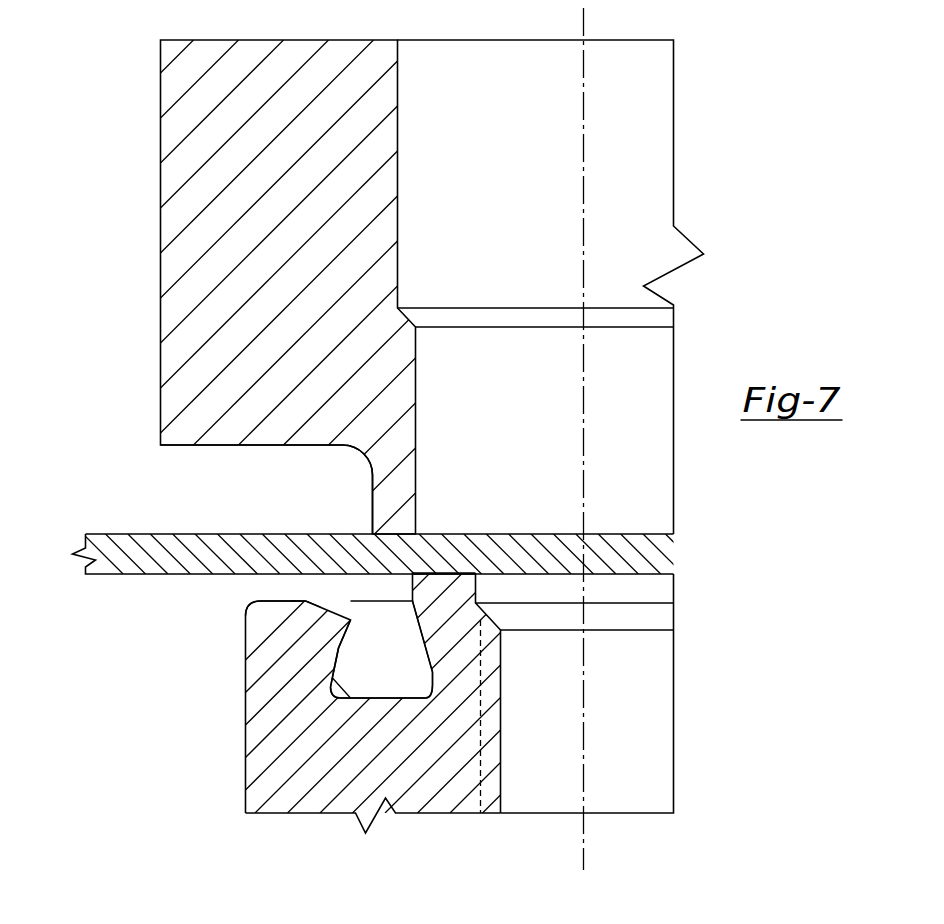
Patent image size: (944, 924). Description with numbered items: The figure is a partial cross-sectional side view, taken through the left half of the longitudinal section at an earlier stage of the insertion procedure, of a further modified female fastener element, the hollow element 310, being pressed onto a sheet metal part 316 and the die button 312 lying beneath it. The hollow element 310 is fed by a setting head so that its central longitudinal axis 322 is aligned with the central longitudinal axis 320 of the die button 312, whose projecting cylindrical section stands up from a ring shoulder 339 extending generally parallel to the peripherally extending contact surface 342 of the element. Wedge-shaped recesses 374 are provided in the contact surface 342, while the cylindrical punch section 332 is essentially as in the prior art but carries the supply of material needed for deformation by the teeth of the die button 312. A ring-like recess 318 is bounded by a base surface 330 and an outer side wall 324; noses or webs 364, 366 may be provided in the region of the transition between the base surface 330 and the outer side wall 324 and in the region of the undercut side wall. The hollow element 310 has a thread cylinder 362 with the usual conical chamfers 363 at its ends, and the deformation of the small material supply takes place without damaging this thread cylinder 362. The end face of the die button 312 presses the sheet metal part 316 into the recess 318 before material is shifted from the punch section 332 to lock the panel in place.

The hollow element 310 is at (284, 814).
The die button 312 is at (160, 145).
The plate 316 is at (467, 540).
The ring-like recess 318 is at (401, 671).
The central longitudinal axis of the die button 320 is at (583, 98).
The central longitudinal axis of the element 322 is at (583, 710).
The outer side wall 324 is at (340, 643).
The base surface 330 is at (352, 700).
The cylindrical punch section 332 is at (468, 588).
The ring shoulder 339 is at (230, 445).
The peripherally extending contact surface 342 is at (280, 601).
The thread cylinder 362 is at (495, 698).
The conical chamfers 363 is at (657, 619).
The nose or web 364 is at (332, 694).
The nose or web 366 is at (425, 698).
The wedge-shaped recesses 374 is at (327, 601).